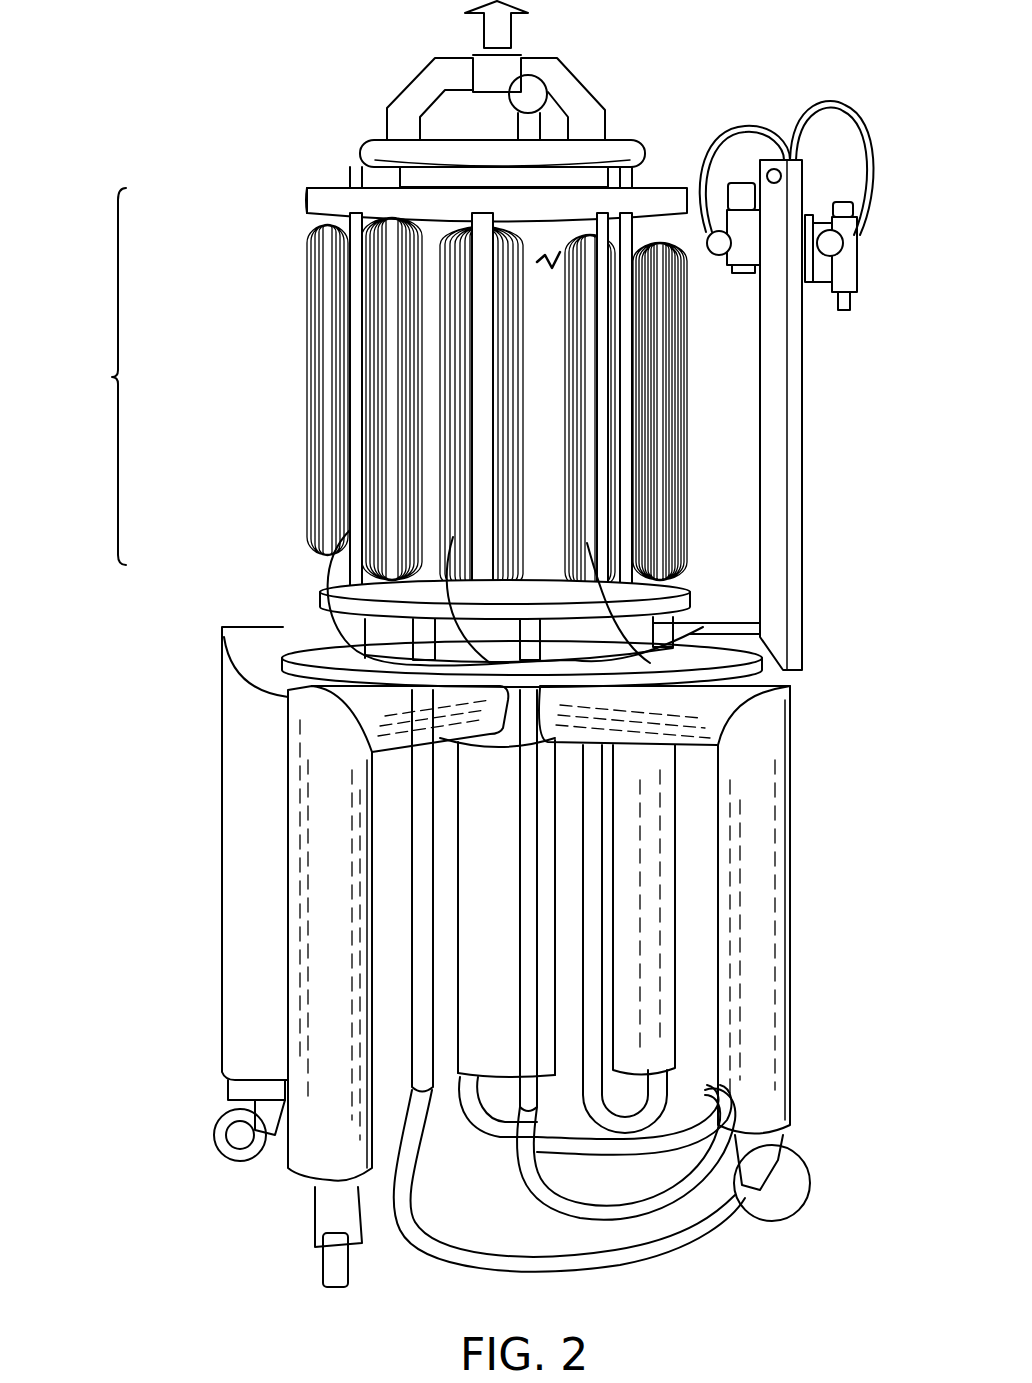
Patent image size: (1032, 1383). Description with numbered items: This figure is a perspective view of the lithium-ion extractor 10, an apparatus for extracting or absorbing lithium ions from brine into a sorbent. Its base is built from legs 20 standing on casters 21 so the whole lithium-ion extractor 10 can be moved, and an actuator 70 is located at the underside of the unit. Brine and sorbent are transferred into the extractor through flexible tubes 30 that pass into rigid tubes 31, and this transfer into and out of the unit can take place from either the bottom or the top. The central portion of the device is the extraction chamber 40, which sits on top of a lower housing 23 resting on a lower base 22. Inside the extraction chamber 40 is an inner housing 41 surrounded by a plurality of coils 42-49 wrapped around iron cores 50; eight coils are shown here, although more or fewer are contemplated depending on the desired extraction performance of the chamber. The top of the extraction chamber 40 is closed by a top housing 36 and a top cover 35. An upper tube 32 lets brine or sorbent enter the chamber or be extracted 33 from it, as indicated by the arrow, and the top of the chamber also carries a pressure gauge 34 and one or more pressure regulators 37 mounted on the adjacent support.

The lithium-ion extractor 10 is at (140, 118).
The legs 20 is at (222, 875).
The casters 21 is at (323, 1268).
The lower base 22 is at (317, 627).
The lower housing 23 is at (322, 585).
The flexible tubes 30 is at (598, 1258).
The rigid tubes 31 is at (412, 887).
The upper tube 32 is at (407, 85).
The extracted flow 33 is at (484, 33).
The pressure gauge 34 is at (548, 82).
The top cover 35 is at (368, 143).
The top housing 36 is at (305, 212).
The pressure regulator 37 is at (857, 275).
The extraction chamber 40 is at (112, 377).
The inner housing 41 is at (557, 252).
The coils 42-49 is at (307, 362).
The iron core 50 is at (472, 222).
The actuator 70 is at (538, 895).